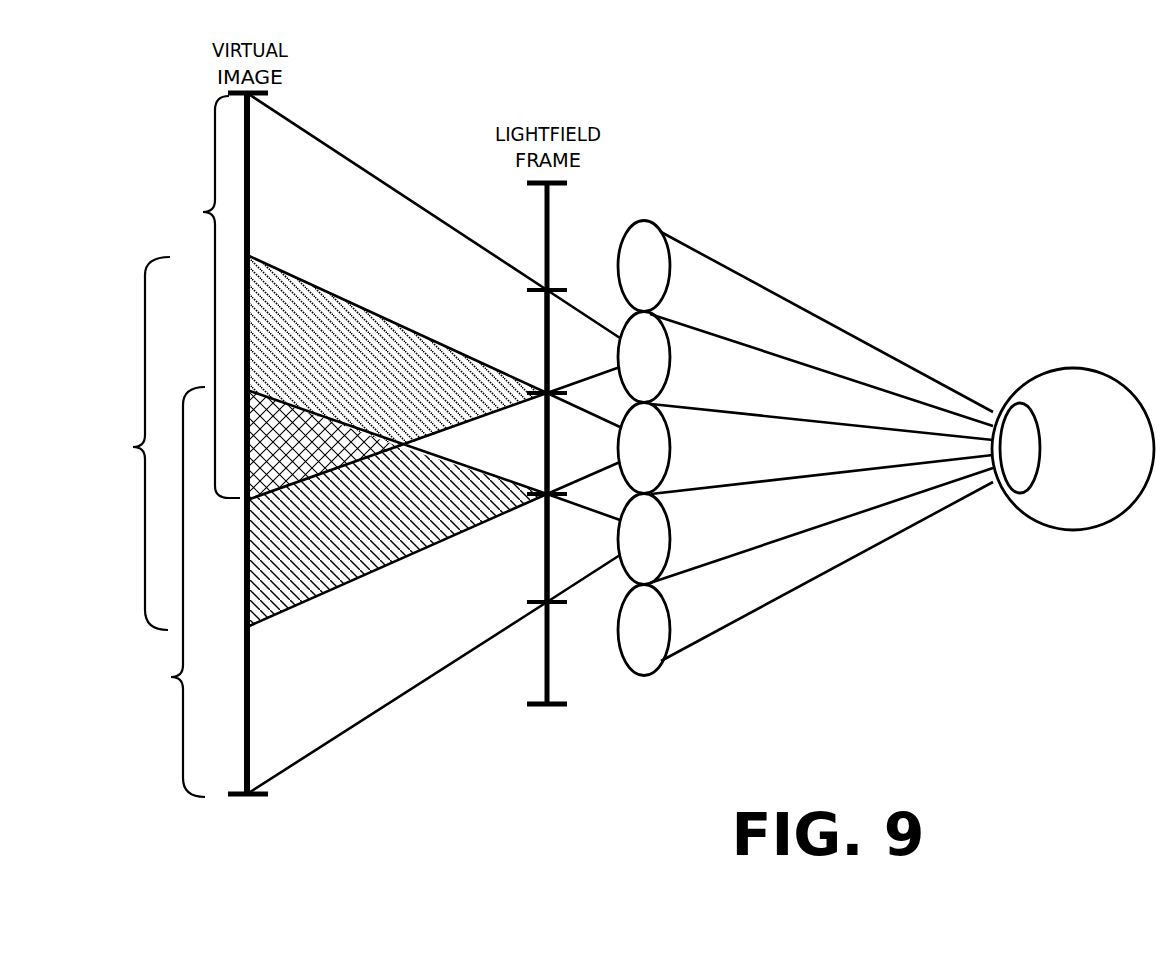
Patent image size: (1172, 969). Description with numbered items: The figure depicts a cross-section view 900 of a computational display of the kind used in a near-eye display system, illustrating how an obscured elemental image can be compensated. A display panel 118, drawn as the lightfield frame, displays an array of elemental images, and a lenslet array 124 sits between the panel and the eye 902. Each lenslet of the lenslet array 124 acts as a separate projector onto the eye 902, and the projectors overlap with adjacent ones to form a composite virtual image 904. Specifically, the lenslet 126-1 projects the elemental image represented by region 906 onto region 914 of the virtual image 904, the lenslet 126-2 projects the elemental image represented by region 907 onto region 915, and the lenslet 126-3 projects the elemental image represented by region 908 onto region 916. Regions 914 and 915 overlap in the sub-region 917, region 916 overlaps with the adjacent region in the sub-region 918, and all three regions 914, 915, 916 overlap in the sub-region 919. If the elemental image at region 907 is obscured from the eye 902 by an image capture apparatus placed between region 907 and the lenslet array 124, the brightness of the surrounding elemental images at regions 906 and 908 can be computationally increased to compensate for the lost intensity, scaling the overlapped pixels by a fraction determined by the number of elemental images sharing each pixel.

The cross-section view 900 is at (835, 186).
The eye 902 is at (1068, 368).
The virtual image 904 is at (247, 810).
The region 906 is at (553, 345).
The region 907 is at (553, 445).
The region 908 is at (553, 546).
The display panel 118 is at (576, 475).
The lenslet array 124 is at (670, 426).
The lenslet 126-1 is at (672, 364).
The lenslet 126-2 is at (672, 444).
The lenslet 126-3 is at (672, 520).
The region of the virtual image 914 is at (203, 212).
The region of the virtual image 915 is at (133, 447).
The region of the virtual image 916 is at (171, 677).
The sub-region 917 is at (392, 323).
The sub-region 918 is at (405, 558).
The sub-region 919 is at (370, 447).